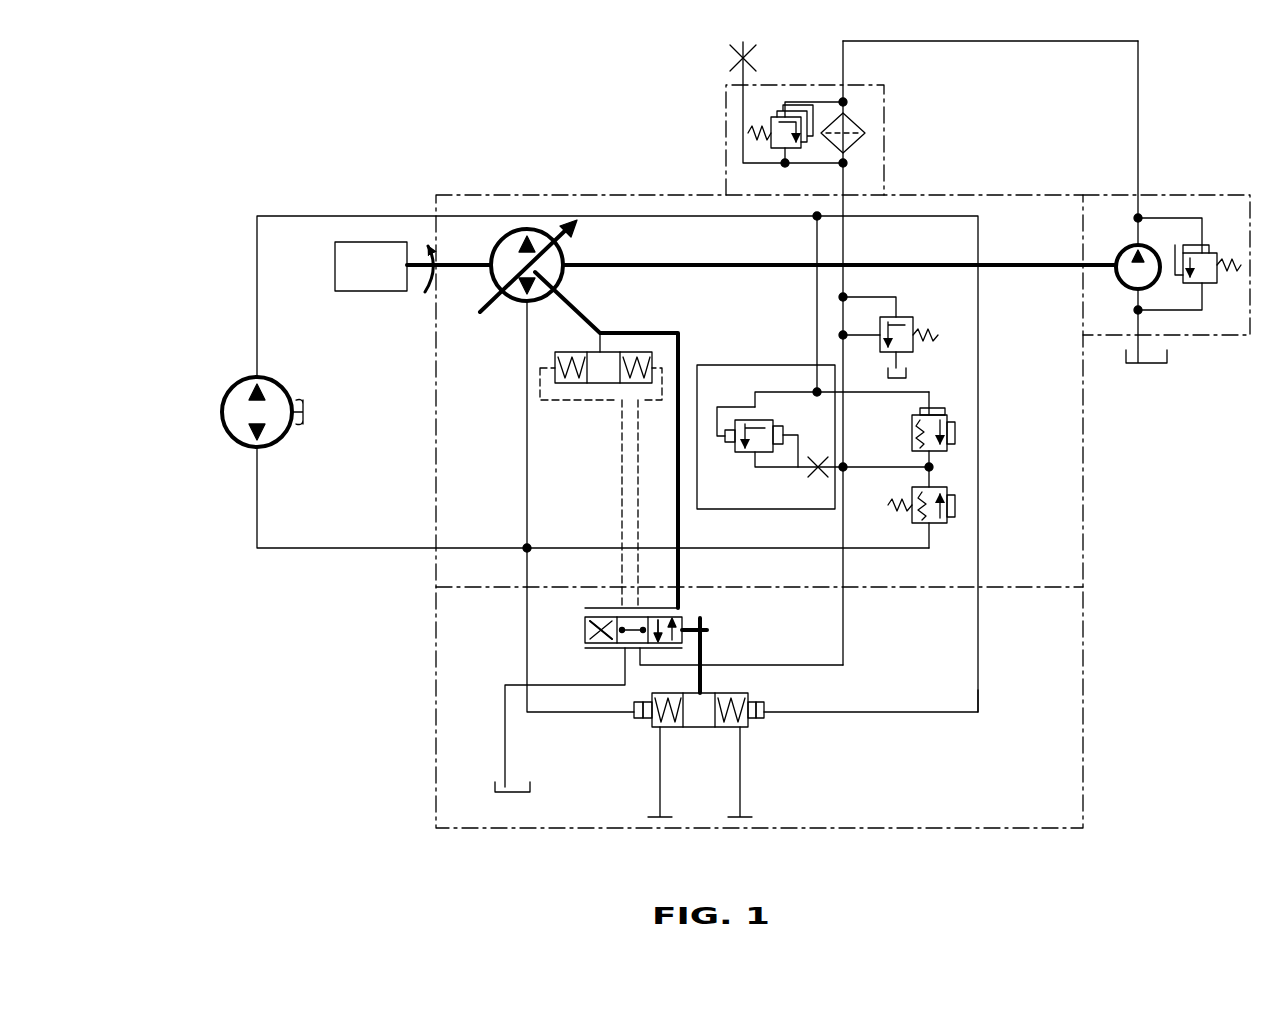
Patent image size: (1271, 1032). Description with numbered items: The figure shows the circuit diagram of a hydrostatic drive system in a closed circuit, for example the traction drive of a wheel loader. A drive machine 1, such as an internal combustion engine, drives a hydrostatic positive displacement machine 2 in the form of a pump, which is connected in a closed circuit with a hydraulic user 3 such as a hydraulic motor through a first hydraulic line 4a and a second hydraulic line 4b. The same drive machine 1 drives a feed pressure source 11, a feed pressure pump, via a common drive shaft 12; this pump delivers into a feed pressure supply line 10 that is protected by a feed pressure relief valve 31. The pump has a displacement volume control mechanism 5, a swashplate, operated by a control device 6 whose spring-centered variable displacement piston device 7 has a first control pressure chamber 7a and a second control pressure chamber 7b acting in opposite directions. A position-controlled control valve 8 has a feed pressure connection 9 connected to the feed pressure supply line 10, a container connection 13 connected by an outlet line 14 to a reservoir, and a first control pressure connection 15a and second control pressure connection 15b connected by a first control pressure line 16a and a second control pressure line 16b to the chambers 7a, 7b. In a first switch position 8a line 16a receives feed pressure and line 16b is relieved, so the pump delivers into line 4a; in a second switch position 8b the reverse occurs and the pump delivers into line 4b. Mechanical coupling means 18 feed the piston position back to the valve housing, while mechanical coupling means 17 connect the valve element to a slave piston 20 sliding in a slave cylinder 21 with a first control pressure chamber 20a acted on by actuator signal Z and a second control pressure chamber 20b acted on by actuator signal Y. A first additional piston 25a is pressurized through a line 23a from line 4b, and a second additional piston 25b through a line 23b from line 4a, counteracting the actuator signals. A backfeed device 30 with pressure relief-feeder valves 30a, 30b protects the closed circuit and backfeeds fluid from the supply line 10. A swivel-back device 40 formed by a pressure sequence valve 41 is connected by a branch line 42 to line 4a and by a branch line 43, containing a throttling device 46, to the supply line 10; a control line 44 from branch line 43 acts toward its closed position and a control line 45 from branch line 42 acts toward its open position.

The drive machine 1 is at (347, 270).
The hydrostatic positive displacement machine 2 is at (508, 253).
The hydraulic user 3 is at (235, 405).
The first hydraulic line 4a is at (302, 216).
The second hydraulic line 4b is at (290, 548).
The displacement volume control mechanism 5 is at (563, 222).
The control device 6 is at (484, 386).
The spring-centered variable displacement piston device 7 is at (607, 332).
The first control pressure chamber 7a is at (562, 352).
The second control pressure chamber 7b is at (645, 352).
The position-controlled control valve 8 is at (556, 630).
The first switch position 8a is at (588, 622).
The second switch position 8b is at (675, 617).
The feed pressure connection 9 is at (648, 660).
The feed pressure supply line 10 is at (843, 617).
The feed pressure source 11 is at (1115, 240).
The common drive shaft 12 is at (1018, 263).
The container connection 13 is at (622, 648).
The outlet line 14 is at (505, 740).
The first control pressure connection 15a is at (620, 605).
The second control pressure connection 15b is at (643, 605).
The first control pressure line 16a is at (622, 493).
The second control pressure line 16b is at (638, 455).
The mechanical coupling means 17 is at (705, 624).
The mechanical coupling means 18 is at (675, 428).
The slave piston 20 is at (692, 737).
The first control pressure chamber 20a is at (737, 728).
The second control pressure chamber 20b is at (660, 728).
The slave cylinder 21 is at (752, 695).
The line 23a is at (527, 667).
The line 23b is at (978, 693).
The first additional piston 25a is at (650, 722).
The second additional piston 25b is at (752, 722).
The backfeed device 30 is at (950, 472).
The pressure relief-feeder valve 30a is at (950, 420).
The pressure relief-feeder valve 30b is at (950, 515).
The feed pressure relief valve 31 is at (900, 327).
The swivel-back device 40 is at (768, 352).
The pressure sequence valve 41 is at (745, 452).
The branch line 42 is at (815, 308).
The branch line 43 is at (775, 468).
The control line 44 is at (795, 432).
The control line 45 is at (732, 365).
The throttling device 46 is at (815, 478).